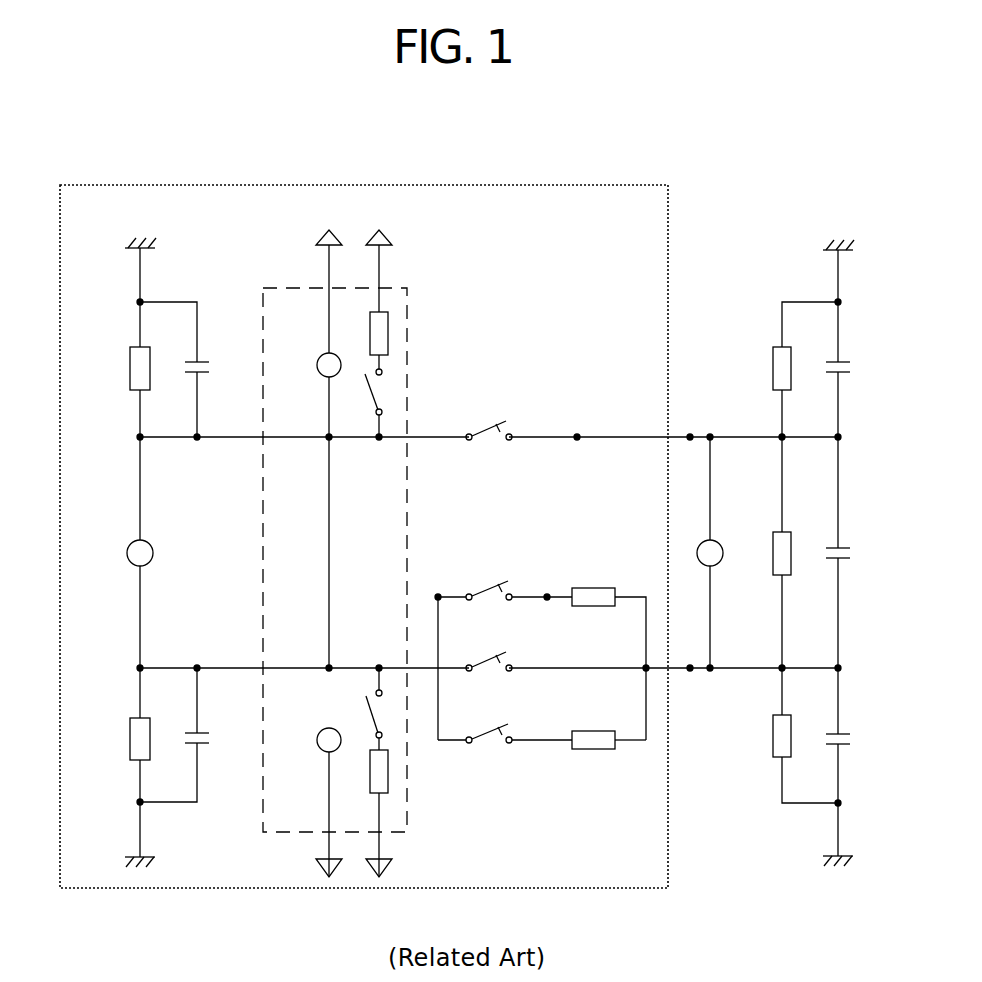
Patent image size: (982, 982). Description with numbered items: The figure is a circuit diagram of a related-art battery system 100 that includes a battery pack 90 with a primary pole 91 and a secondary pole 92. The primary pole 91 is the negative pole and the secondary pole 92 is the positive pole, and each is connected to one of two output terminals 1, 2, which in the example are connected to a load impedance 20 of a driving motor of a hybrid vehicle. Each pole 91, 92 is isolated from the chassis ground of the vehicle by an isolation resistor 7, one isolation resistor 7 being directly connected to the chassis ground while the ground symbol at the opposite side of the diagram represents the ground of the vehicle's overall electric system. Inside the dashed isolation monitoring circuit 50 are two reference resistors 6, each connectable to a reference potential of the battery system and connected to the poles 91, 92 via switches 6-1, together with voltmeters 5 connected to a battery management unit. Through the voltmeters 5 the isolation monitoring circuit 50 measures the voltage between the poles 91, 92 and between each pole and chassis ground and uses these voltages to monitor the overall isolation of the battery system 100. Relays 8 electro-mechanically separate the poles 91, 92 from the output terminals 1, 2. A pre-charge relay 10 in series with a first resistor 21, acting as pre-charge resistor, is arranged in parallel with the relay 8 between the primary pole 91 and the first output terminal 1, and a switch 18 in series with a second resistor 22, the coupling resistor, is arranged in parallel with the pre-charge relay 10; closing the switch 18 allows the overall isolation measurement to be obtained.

The battery system 100 is at (672, 206).
The first output terminal 1 is at (692, 671).
The second output terminal 2 is at (688, 434).
The voltmeter 5 is at (320, 354).
The reference resistor 6 is at (389, 312).
The switch 6-1 is at (376, 384).
The isolation resistor 7 is at (132, 348).
The relay 8 is at (490, 422).
The pre-charge relay 10 is at (504, 722).
The switch 18 is at (502, 580).
The load impedance 20 is at (776, 532).
The first resistor 21 is at (597, 738).
The second resistor 22 is at (590, 588).
The isolation monitoring circuit 50 is at (408, 352).
The battery pack 90 is at (150, 543).
The primary pole 91 is at (138, 664).
The secondary pole 92 is at (138, 442).